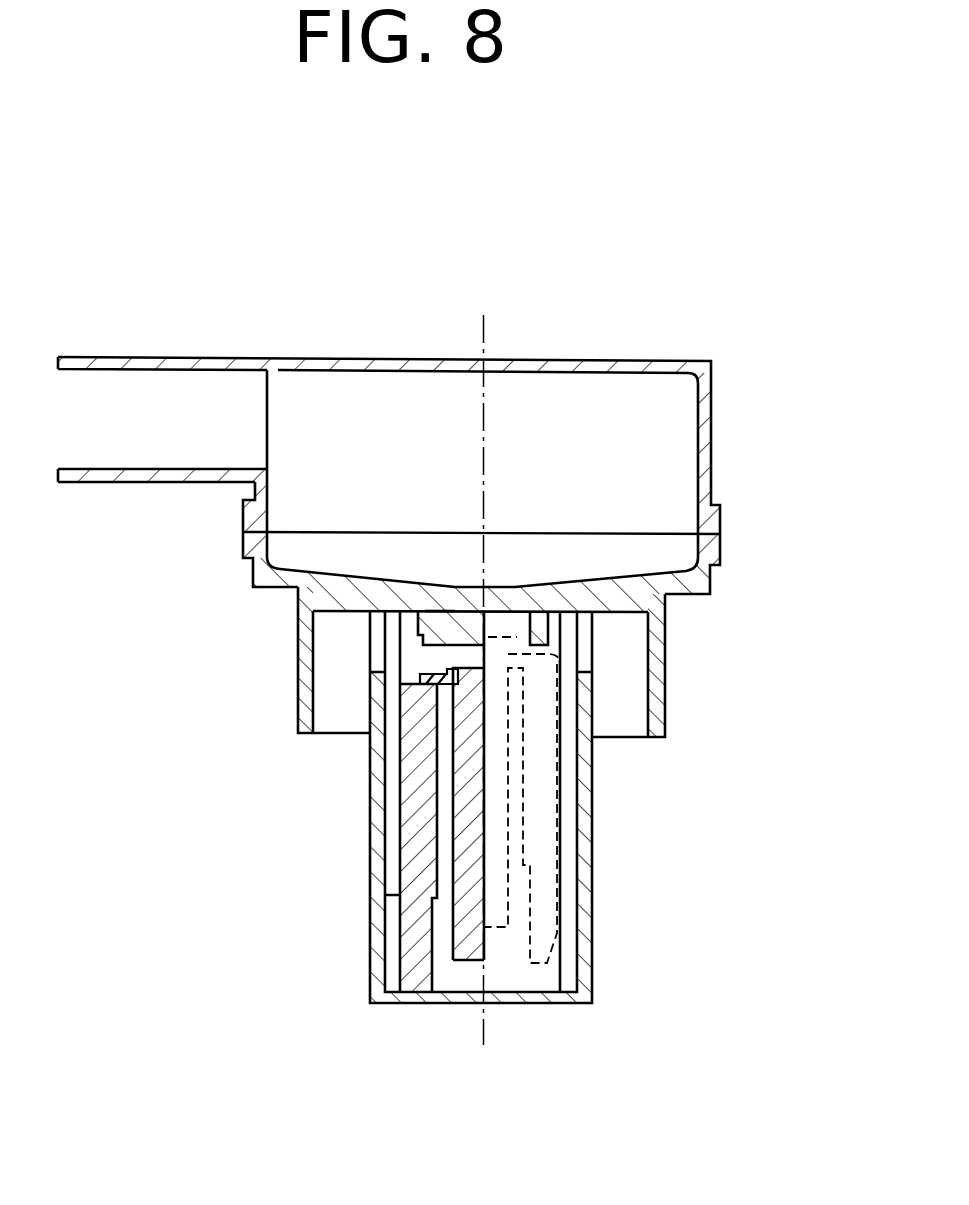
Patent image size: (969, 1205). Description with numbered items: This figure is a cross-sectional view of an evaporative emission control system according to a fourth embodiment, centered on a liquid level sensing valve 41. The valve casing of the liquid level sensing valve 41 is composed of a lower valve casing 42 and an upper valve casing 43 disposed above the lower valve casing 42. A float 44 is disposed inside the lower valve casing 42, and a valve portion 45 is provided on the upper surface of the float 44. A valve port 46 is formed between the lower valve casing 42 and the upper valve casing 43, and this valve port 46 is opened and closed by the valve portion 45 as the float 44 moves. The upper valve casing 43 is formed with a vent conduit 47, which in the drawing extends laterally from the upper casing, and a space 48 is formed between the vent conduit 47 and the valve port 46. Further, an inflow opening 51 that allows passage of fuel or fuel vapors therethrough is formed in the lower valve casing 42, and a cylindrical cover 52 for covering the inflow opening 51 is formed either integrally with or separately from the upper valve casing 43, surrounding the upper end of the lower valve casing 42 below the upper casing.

The liquid level sensing valve 41 is at (600, 881).
The lower valve casing 42 is at (370, 877).
The upper valve casing 43 is at (710, 447).
The float 44 is at (423, 917).
The valve portion 45 is at (432, 678).
The valve port 46 is at (452, 617).
The vent conduit 47 is at (130, 470).
The space 48 is at (395, 455).
The inflow opening 51 is at (380, 658).
The cylindrical cover 52 is at (308, 678).